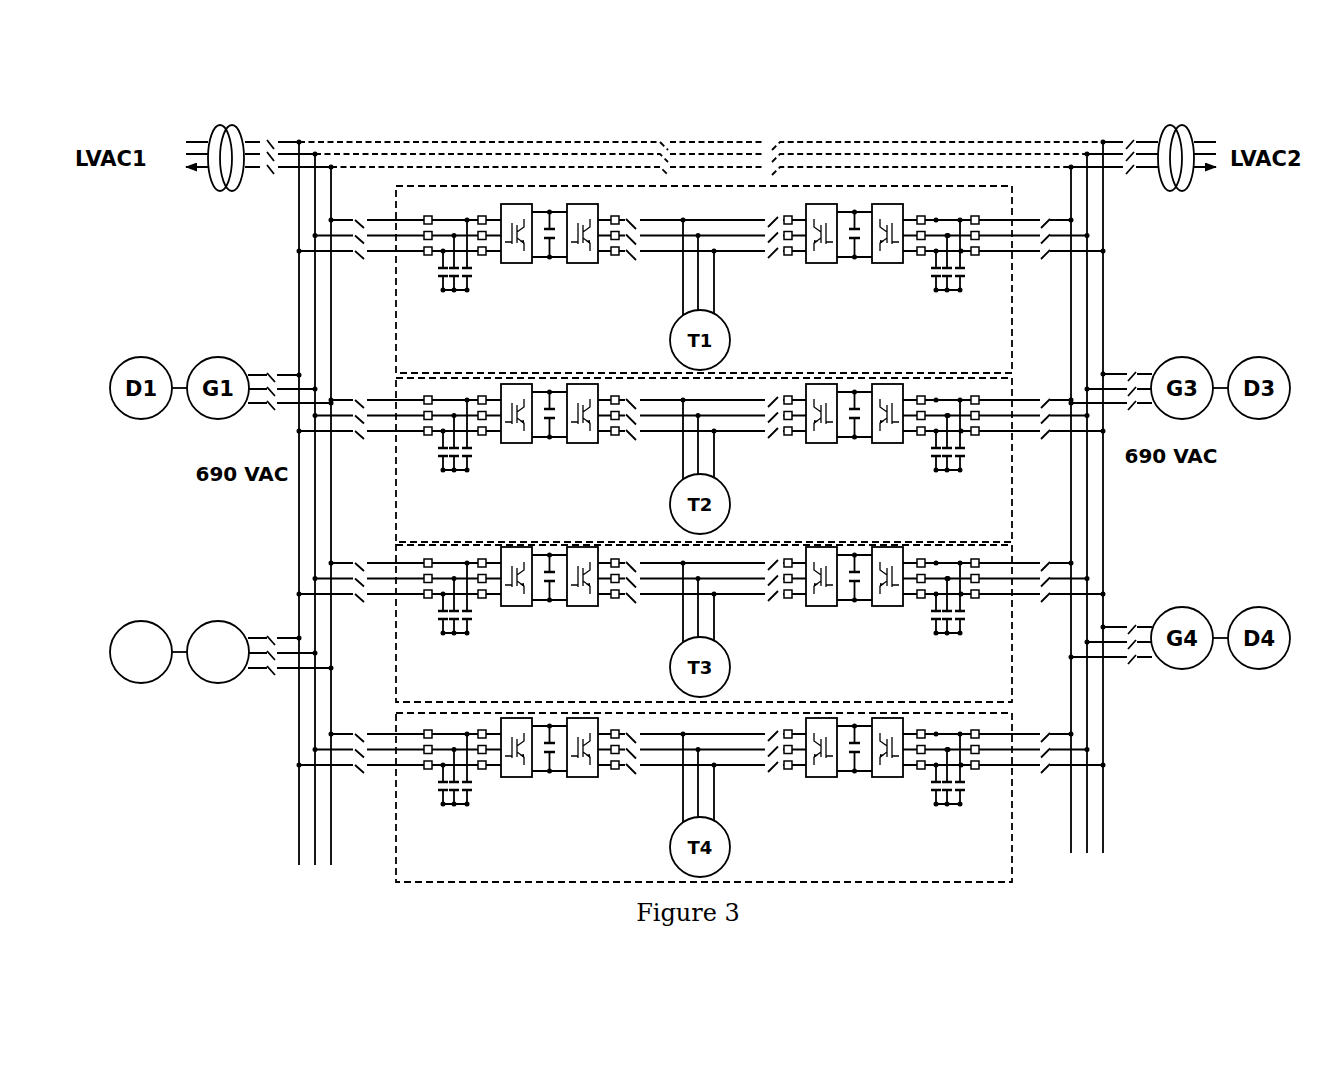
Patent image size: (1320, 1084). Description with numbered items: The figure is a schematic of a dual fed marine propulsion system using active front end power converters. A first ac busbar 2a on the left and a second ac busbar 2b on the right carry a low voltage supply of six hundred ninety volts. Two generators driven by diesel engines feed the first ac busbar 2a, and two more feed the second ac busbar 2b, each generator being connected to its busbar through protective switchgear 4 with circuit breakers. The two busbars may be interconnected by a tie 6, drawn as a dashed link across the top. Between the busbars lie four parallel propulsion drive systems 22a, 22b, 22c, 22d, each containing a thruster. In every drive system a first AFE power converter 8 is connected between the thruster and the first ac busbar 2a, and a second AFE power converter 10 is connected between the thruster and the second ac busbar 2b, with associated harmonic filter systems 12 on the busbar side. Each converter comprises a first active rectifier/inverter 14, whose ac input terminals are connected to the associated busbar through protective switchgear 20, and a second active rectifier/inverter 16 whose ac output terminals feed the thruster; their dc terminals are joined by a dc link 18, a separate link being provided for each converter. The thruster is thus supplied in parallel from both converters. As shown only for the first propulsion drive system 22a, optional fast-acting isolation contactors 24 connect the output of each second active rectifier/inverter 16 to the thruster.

The first ac busbar 2a is at (285, 305).
The second ac busbar 2b is at (1123, 540).
The protective switchgear 4 is at (267, 625).
The tie 6 is at (722, 132).
The first AFE power converter 8 is at (598, 275).
The second AFE power converter 10 is at (800, 275).
The harmonic filter system 12 is at (458, 305).
The first active rectifier/inverter 14 is at (509, 451).
The second active rectifier/inverter 16 is at (588, 452).
The dc link 18 is at (549, 447).
The protective switchgear 20 is at (364, 272).
The first propulsion drive system 22a is at (1012, 312).
The second propulsion drive system 22b is at (1012, 480).
The third propulsion drive system 22c is at (1012, 663).
The fourth propulsion drive system 22d is at (1012, 818).
The fast-acting isolation contactors 24 is at (632, 272).